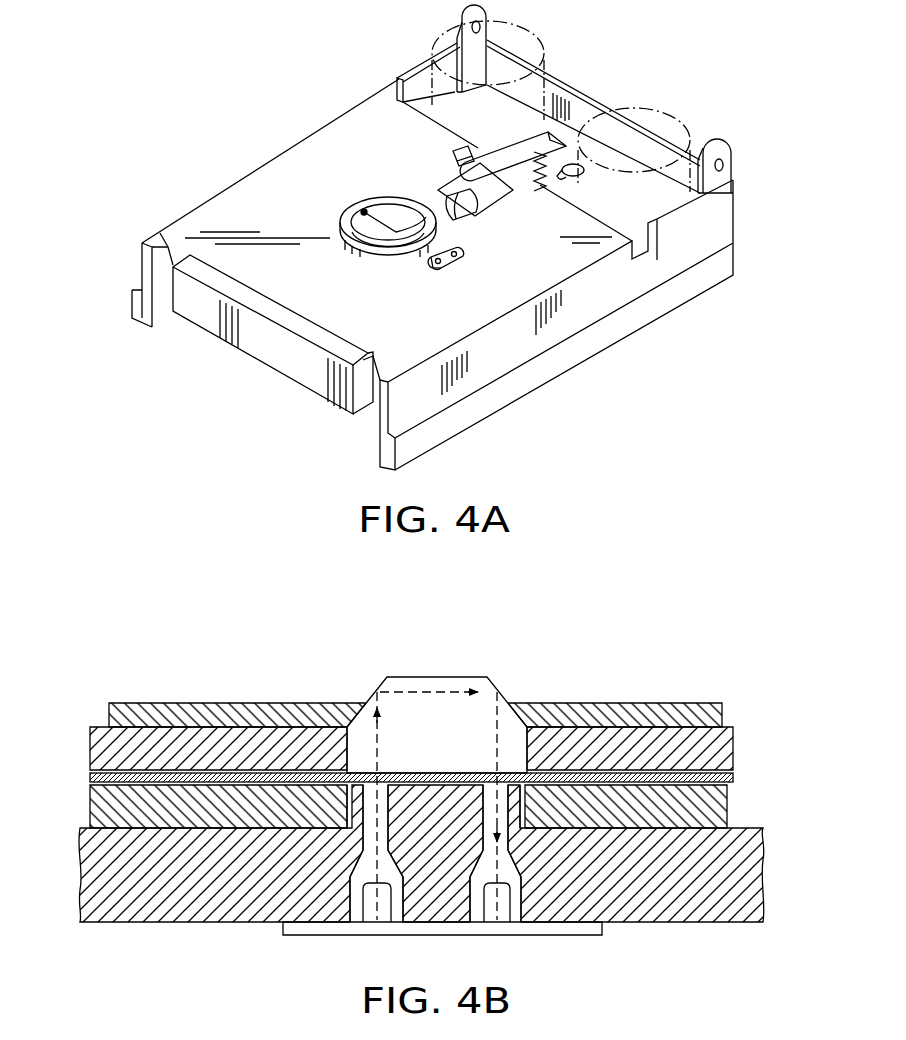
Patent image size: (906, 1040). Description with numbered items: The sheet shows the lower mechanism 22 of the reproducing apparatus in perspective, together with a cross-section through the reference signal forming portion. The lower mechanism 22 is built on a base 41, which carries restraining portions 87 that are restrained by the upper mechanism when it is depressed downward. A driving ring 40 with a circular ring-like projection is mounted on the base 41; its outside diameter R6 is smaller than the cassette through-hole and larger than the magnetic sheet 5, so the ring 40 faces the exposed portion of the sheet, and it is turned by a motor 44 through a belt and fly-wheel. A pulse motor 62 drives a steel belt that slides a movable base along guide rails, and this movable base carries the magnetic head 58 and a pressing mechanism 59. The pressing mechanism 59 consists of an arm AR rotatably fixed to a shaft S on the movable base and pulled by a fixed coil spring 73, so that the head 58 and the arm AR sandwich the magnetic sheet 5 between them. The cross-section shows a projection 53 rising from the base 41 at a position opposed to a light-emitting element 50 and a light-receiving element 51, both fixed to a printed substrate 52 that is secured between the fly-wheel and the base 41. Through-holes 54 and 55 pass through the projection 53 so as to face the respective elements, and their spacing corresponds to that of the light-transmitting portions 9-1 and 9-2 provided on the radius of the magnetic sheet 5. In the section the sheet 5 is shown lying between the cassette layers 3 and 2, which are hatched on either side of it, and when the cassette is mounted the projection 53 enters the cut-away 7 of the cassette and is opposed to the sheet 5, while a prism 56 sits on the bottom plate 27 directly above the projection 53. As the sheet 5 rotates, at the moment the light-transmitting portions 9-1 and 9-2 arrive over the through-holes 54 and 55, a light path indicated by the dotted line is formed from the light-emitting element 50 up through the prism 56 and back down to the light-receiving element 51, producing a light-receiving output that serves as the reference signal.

In FIG. 4A, the lower mechanism 22 is at (679, 306).
In FIG. 4A, the base 41 is at (267, 312).
In FIG. 4A, the restraining portions 87 is at (167, 247).
In FIG. 4A, the motor 44 is at (515, 28).
In FIG. 4A, the pulse motor 62 is at (657, 108).
In FIG. 4A, the arm AR is at (508, 162).
In FIG. 4A, the pressing mechanism 59 is at (460, 155).
In FIG. 4A, the driving ring 40 is at (376, 252).
In FIG. 4A, the outside diameter of the ring R6 is at (380, 208).
In FIG. 4A, the magnetic head 58 is at (476, 204).
In FIG. 4A, the coil spring 73 is at (545, 183).
In FIG. 4A, the shaft S is at (583, 173).
In FIG. 4A, the projection 53 is at (452, 270).
In FIG. 4B, the projection 53 is at (347, 812).
In FIG. 4A, the through-hole 54 is at (458, 254).
In FIG. 4B, the through-hole 54 is at (349, 900).
In FIG. 4A, the through-hole 55 is at (436, 266).
In FIG. 4B, the through-hole 55 is at (522, 887).
In FIG. 4B, the bottom plate 27 is at (640, 710).
In FIG. 4B, the layer 3 is at (733, 740).
In FIG. 4B, the prism 56 is at (445, 675).
In FIG. 4B, the magnetic sheet 5 is at (733, 778).
In FIG. 4B, the layer 2 is at (725, 808).
In FIG. 4B, the light-emitting element 50 is at (373, 913).
In FIG. 4B, the light-receiving element 51 is at (493, 913).
In FIG. 4B, the printed substrate 52 is at (527, 932).
In FIG. 4B, the light-transmitting portion 9-1 is at (383, 774).
In FIG. 4B, the light-transmitting portion 9-2 is at (489, 777).
In FIG. 4B, the cut-away 7 is at (508, 740).